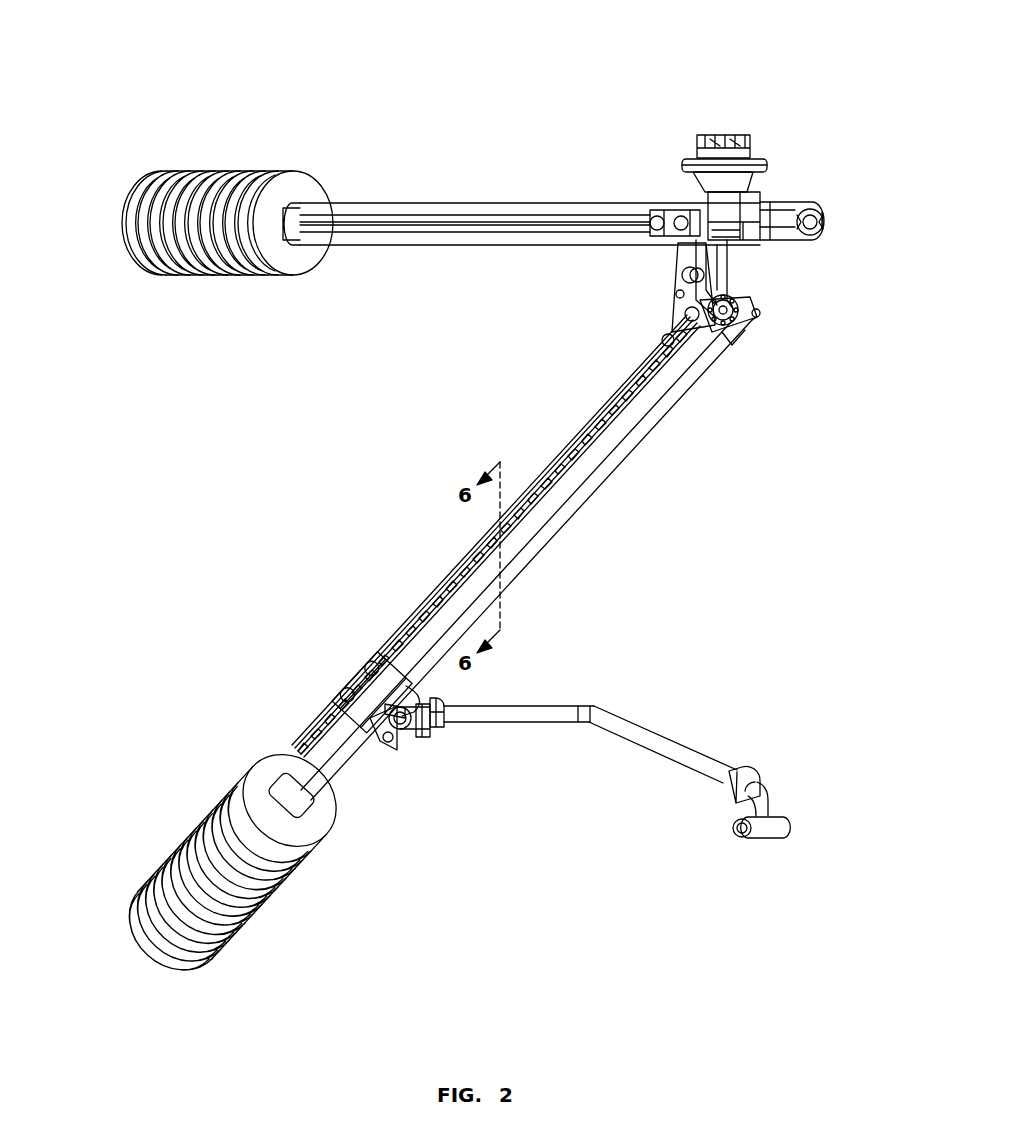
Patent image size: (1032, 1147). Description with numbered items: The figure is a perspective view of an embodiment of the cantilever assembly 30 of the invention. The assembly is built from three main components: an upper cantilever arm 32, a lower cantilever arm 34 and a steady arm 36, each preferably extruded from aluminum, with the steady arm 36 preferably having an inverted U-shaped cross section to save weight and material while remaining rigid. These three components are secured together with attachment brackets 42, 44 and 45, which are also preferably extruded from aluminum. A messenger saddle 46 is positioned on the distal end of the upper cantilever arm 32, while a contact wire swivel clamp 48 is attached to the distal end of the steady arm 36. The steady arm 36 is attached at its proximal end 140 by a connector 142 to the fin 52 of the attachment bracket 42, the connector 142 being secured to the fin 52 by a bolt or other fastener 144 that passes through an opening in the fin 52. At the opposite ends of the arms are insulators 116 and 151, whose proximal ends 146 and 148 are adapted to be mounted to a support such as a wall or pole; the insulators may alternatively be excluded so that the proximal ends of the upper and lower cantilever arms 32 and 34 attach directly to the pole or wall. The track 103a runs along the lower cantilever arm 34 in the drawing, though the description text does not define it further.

The cantilever assembly 30 is at (835, 36).
The upper cantilever arm 32 is at (458, 235).
The lower cantilever arm 34 is at (598, 468).
The steady arm 36 is at (660, 745).
The attachment bracket 42 is at (370, 682).
The attachment bracket 44 is at (676, 258).
The attachment bracket 45 is at (738, 300).
The messenger saddle 46 is at (757, 165).
The contact wire swivel clamp 48 is at (783, 818).
The fin 52 is at (402, 748).
The track 103a is at (548, 508).
The insulator 116 is at (297, 878).
The proximal end 140 is at (440, 700).
The connector 142 is at (432, 735).
The fastener 144 is at (382, 715).
The proximal end 146 is at (211, 886).
The proximal end 148 is at (122, 215).
The insulator 151 is at (240, 275).